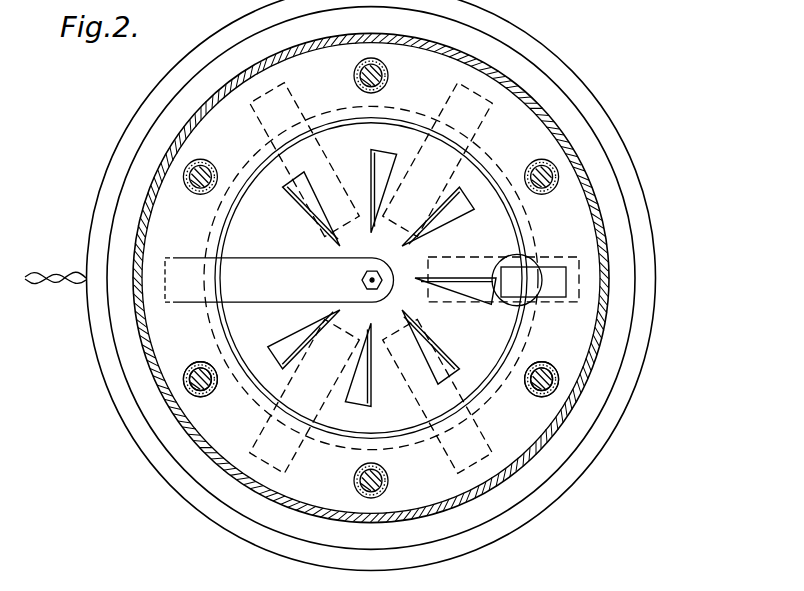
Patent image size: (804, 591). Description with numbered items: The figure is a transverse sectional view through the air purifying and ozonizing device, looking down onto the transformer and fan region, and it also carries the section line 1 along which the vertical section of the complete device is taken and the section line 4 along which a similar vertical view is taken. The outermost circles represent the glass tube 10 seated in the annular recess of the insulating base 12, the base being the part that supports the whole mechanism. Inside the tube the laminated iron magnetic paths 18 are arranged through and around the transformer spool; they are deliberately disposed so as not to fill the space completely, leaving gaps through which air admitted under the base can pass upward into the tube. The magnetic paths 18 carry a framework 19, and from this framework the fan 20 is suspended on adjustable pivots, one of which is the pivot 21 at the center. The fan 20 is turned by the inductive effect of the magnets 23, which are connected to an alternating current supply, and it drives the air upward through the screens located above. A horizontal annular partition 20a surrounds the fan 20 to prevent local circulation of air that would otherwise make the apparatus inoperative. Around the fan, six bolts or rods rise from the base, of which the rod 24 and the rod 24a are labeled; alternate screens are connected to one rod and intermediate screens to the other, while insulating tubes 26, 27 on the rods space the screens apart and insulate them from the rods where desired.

The section line 1 1 is at (683, 280).
The section line 4 4 is at (372, 547).
The glass tube 10 is at (596, 193).
The insulating base 12 is at (135, 413).
The magnetic paths 18 is at (492, 463).
The framework 19 is at (237, 268).
The fan 20 is at (505, 342).
The horizontal annular partition 20a is at (303, 479).
The adjustable pivot 21 is at (380, 276).
The magnets 23 is at (503, 256).
The bolt or rod 24 is at (556, 390).
The bolt or rod 24a is at (187, 375).
The insulating tube 26 is at (536, 395).
The insulating tube 27 is at (556, 392).